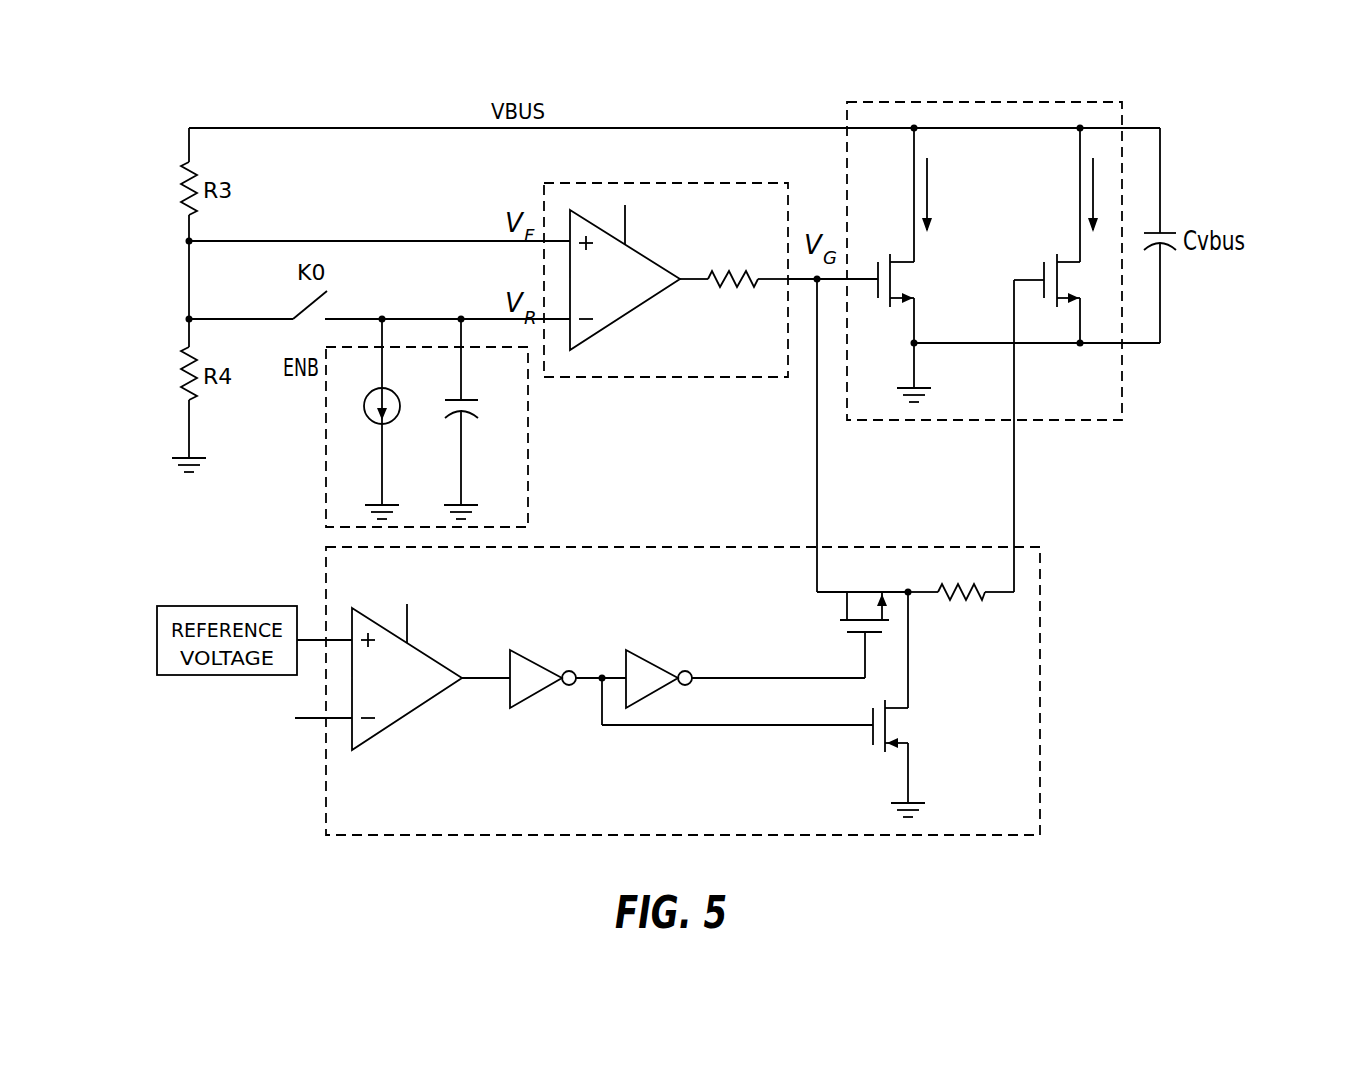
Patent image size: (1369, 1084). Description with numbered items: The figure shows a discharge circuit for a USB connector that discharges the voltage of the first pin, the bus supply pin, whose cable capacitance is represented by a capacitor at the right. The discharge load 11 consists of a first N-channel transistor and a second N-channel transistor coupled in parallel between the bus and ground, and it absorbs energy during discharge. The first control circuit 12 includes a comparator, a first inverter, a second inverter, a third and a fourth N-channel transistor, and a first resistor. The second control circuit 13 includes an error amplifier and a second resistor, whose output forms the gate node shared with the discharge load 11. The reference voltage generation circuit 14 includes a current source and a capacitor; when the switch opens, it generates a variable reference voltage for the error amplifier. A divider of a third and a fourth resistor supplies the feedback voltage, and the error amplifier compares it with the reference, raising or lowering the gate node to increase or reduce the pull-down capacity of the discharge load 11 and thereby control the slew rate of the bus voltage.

The discharge load 11 is at (983, 102).
The first control circuit 12 is at (683, 547).
The second control circuit 13 is at (664, 183).
The reference voltage generation circuit 14 is at (528, 440).